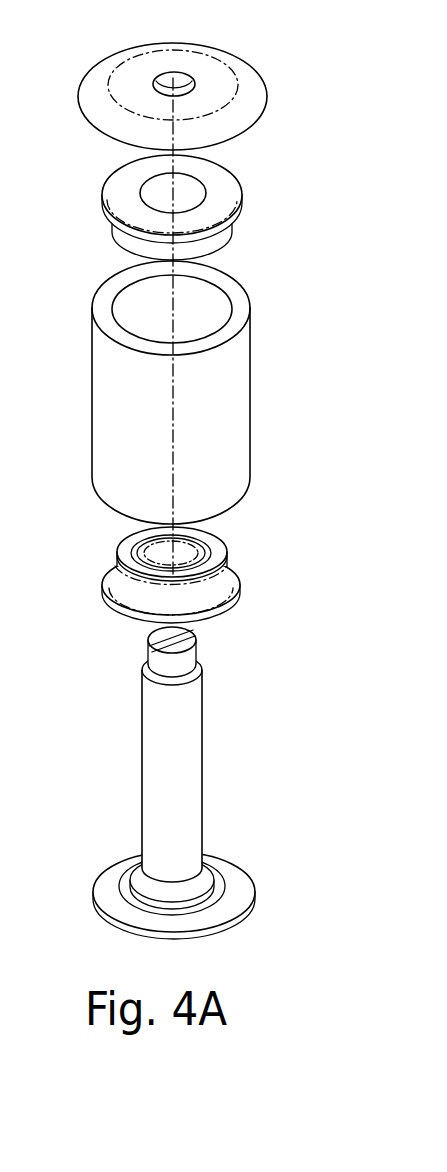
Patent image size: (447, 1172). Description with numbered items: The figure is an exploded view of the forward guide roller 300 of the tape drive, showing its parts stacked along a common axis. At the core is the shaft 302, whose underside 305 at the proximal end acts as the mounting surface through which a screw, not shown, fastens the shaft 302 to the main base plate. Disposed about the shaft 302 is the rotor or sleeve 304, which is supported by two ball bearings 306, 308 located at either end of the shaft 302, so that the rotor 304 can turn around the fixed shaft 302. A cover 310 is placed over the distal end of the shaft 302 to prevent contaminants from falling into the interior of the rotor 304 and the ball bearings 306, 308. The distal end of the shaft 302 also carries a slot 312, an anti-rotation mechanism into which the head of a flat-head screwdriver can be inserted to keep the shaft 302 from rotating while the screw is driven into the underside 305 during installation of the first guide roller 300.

The first guide roller 300 is at (201, 496).
The shaft 302 is at (193, 771).
The rotor 304 is at (250, 377).
The underside 305 is at (118, 906).
The ball bearing 306 is at (235, 188).
The ball bearing 308 is at (233, 572).
The cover 310 is at (262, 80).
The slot 312 is at (147, 633).